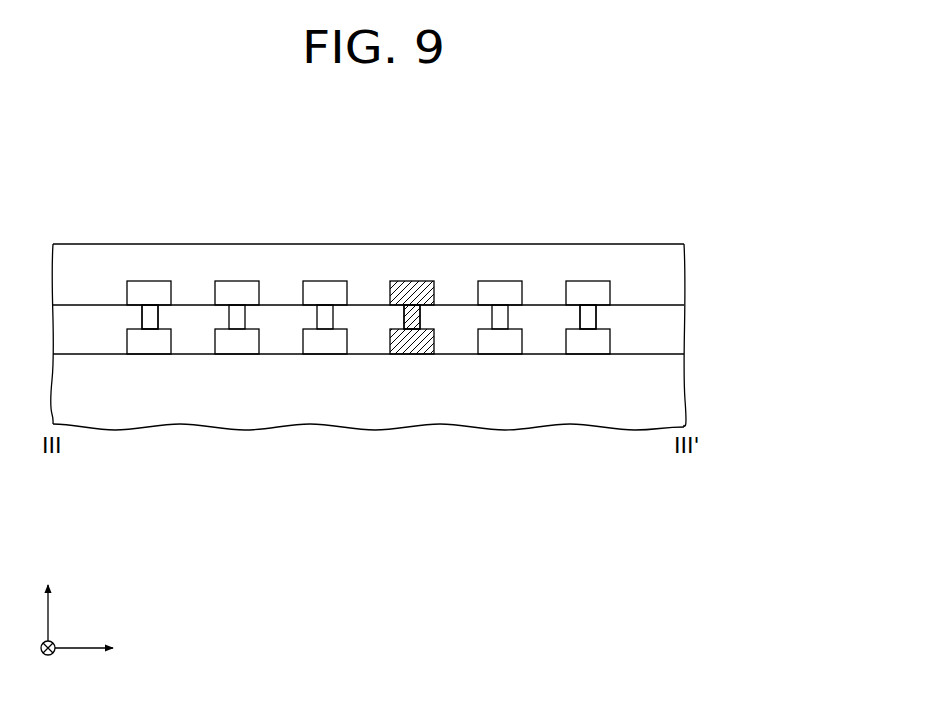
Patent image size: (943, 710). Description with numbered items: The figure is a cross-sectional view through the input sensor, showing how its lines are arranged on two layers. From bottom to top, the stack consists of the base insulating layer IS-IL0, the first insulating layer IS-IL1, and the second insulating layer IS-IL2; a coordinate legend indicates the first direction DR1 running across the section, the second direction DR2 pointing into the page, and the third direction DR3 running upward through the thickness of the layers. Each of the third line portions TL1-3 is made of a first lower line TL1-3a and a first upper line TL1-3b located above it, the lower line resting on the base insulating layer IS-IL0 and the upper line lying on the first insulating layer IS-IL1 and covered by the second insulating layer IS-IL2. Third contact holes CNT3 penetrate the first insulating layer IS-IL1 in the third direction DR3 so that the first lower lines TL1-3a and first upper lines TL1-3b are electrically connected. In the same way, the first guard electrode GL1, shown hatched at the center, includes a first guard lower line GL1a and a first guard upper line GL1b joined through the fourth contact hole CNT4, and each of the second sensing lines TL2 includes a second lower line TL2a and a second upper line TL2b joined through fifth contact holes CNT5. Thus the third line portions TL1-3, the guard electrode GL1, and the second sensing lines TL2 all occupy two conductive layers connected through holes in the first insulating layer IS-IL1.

The third contact holes CNT3 is at (144, 317).
The fourth contact hole CNT4 is at (406, 317).
The fifth contact holes CNT5 is at (582, 317).
The second insulating layer IS-IL2 is at (675, 273).
The first insulating layer IS-IL1 is at (675, 333).
The base insulating layer IS-IL0 is at (670, 388).
The third line portions TL1-3 is at (164, 409).
The first lower line TL1-3a is at (148, 345).
The first upper line TL1-3b is at (135, 293).
The first guard electrode GL1 is at (413, 406).
The first guard lower line GL1a is at (408, 347).
The first guard upper line GL1b is at (398, 292).
The second sensing lines TL2 is at (539, 409).
The second lower line TL2a is at (500, 347).
The second upper line TL2b is at (487, 292).
The first direction DR1 is at (110, 649).
The second direction DR2 is at (48, 663).
The third direction DR3 is at (48, 596).